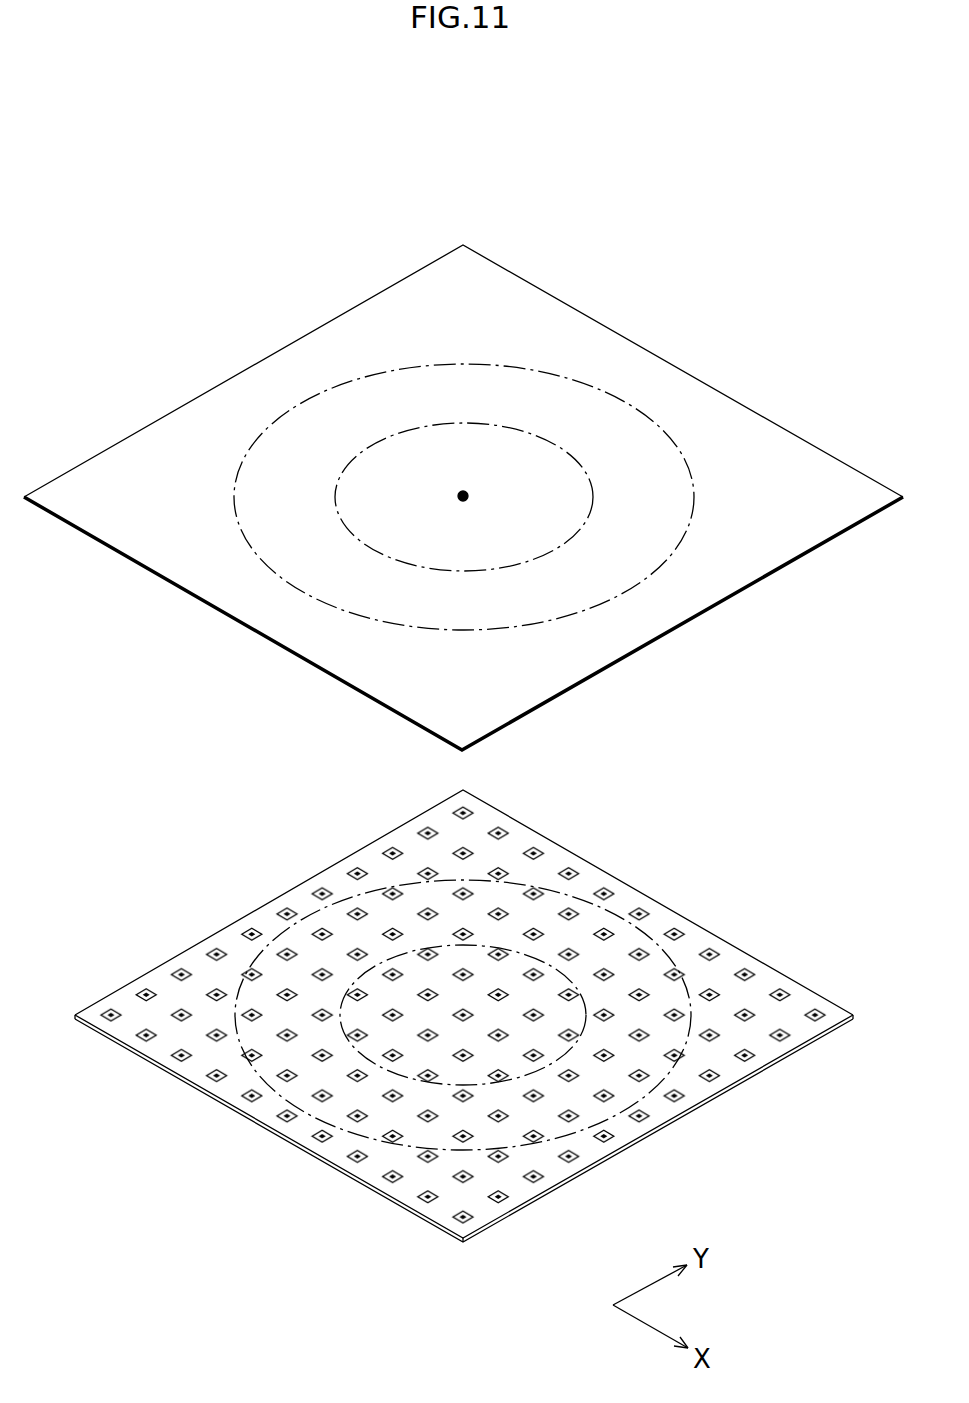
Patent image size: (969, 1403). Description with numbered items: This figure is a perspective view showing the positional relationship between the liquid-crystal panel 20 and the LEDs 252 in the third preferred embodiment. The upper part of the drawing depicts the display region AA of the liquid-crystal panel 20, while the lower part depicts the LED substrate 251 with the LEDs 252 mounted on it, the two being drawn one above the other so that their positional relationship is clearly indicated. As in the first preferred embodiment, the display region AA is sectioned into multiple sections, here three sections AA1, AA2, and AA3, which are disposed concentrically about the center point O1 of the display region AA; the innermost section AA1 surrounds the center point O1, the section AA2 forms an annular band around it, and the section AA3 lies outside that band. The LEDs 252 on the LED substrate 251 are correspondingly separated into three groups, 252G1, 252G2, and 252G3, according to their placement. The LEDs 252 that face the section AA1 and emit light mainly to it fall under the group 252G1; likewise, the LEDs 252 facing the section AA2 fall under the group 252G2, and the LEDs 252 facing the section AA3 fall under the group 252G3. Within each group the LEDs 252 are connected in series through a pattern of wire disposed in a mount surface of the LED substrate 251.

The liquid-crystal panel 20 is at (853, 483).
The display region AA is at (808, 248).
The section AA1 is at (507, 447).
The section AA2 is at (622, 437).
The section AA3 is at (708, 430).
The center point O1 is at (483, 496).
The LED substrate 251 is at (805, 995).
The LEDs 252 is at (822, 1020).
The group 252G1 is at (500, 954).
The group 252G2 is at (604, 934).
The group 252G3 is at (675, 934).